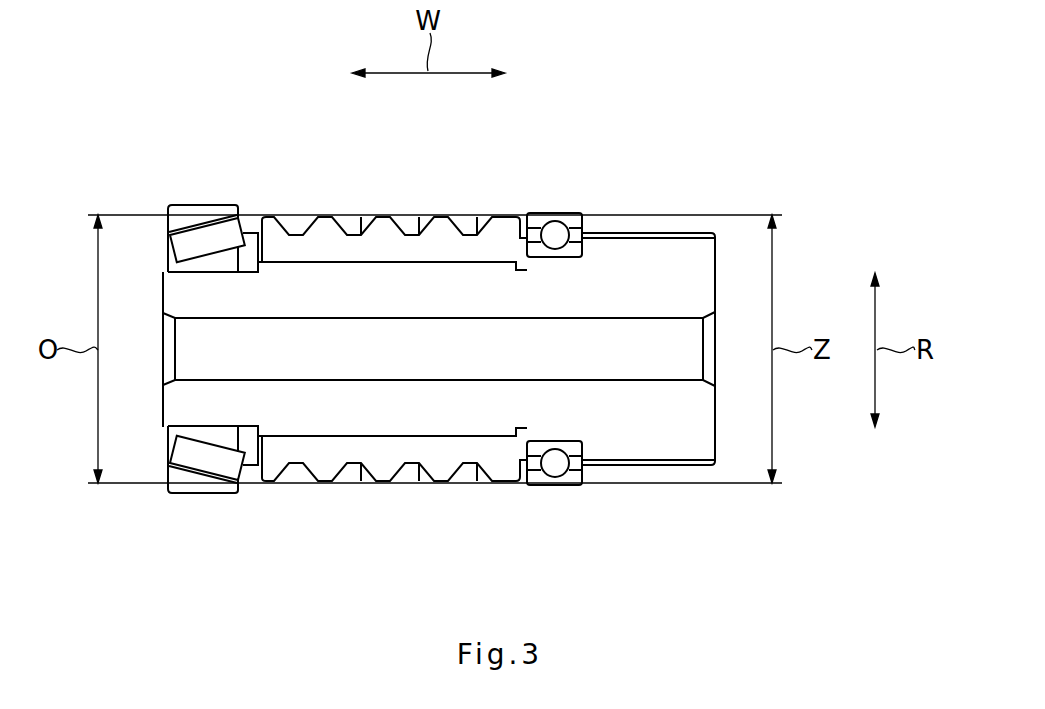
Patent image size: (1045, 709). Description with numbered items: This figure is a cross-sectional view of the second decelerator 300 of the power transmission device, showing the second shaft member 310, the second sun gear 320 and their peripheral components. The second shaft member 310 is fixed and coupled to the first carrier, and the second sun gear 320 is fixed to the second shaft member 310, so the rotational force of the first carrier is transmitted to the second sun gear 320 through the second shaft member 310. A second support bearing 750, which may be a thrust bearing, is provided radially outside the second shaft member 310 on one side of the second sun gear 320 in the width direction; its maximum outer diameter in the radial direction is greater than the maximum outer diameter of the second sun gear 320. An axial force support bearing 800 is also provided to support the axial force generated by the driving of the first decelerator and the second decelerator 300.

The second decelerator 300 is at (605, 143).
The second shaft member 310 is at (630, 430).
The second sun gear 320 is at (440, 463).
The second support bearing 750 is at (568, 478).
The axial force support bearing 800 is at (193, 487).